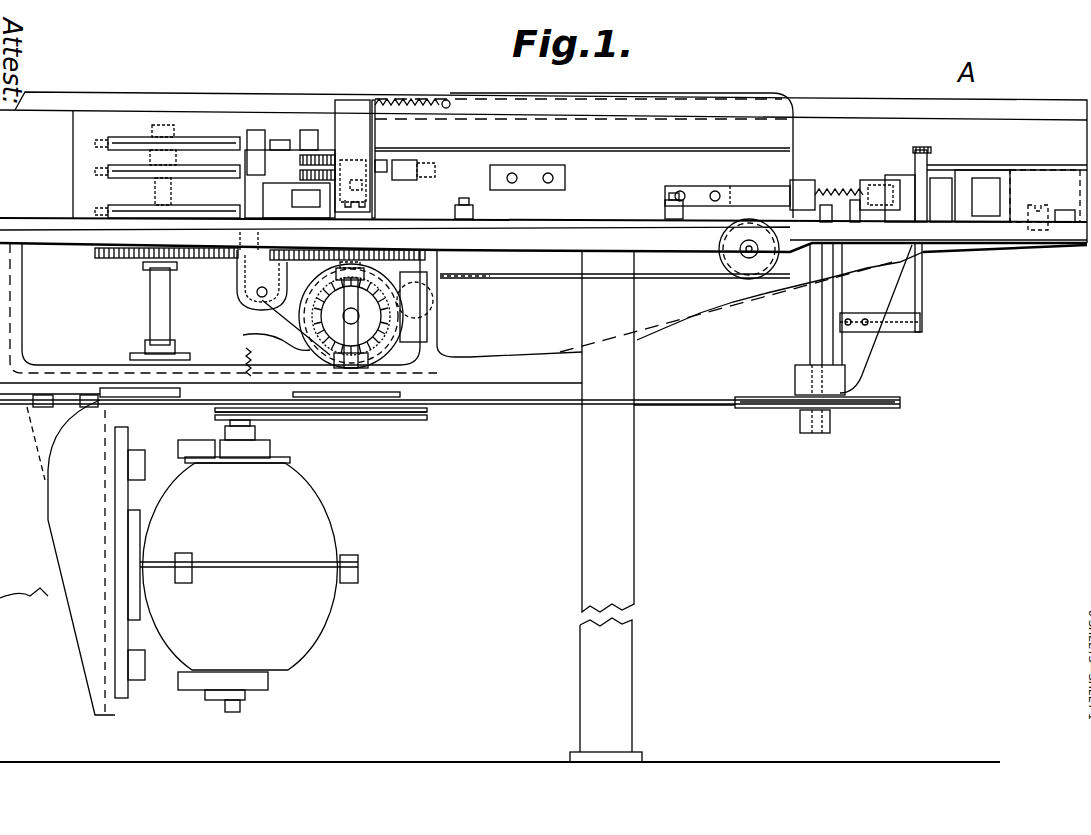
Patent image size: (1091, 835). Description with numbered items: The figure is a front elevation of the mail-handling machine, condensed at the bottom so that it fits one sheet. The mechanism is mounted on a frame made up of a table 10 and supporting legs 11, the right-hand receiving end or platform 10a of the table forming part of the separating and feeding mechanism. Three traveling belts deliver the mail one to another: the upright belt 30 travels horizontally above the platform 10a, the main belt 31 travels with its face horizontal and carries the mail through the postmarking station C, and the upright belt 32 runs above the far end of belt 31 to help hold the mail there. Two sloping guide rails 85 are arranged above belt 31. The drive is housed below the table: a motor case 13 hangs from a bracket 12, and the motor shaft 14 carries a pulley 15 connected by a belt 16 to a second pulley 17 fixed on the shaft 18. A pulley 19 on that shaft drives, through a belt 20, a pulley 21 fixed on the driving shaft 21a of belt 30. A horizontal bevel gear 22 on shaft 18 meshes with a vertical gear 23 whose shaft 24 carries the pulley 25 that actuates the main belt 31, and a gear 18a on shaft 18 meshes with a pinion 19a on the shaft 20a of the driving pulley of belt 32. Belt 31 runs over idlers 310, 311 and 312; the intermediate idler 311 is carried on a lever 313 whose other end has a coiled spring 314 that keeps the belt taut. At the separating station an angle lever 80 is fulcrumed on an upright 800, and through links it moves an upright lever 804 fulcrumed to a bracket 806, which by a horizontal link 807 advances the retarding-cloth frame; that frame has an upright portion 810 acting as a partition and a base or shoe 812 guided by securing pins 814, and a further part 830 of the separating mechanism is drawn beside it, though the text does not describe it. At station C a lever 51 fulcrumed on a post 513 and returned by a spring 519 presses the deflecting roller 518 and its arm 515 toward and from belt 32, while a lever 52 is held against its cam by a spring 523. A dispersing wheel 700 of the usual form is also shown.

The table 10 is at (543, 172).
The receiving end or platform 10a is at (1050, 252).
The supporting legs 11 is at (500, 506).
The bracket 12 is at (127, 562).
The motor case 13 is at (249, 576).
The motor shaft 14 is at (255, 426).
The pulley 15 is at (214, 418).
The belt 16 is at (366, 420).
The second pulley 17 is at (426, 418).
The shaft 18 is at (360, 333).
The gear 18a is at (418, 246).
The pulley 19 is at (395, 396).
The pinion 19a is at (298, 235).
The belt 20 is at (450, 391).
The shaft 20a is at (264, 237).
The pulley 21 is at (740, 410).
The driving shaft 21a is at (810, 312).
The horizontal bevel gear 22 is at (320, 287).
The vertical gear 23 is at (360, 318).
The shaft 24 is at (300, 320).
The pulley 25 is at (356, 305).
The belt 30 is at (958, 272).
The main belt 31 is at (243, 268).
The belt 32 is at (400, 208).
The lever 51 is at (300, 155).
The lever 52 is at (272, 140).
The angle lever 80 is at (990, 168).
The guide rails 85 is at (584, 155).
The idler 310 is at (237, 291).
The idler 311 is at (435, 290).
The idler 312 is at (696, 304).
The lever 313 is at (276, 341).
The coiled spring 314 is at (244, 350).
The post 513 is at (257, 130).
The arm 515 is at (537, 189).
The deflecting or guiding roller 518 is at (500, 165).
The spring 519 is at (305, 130).
The spring 523 is at (340, 112).
The dispersing wheel 700 is at (132, 142).
The upright 800 is at (1078, 172).
The upright lever 804 is at (923, 298).
The bracket 806 is at (903, 333).
The horizontal link 807 is at (880, 317).
The upright portion 810 is at (930, 150).
The base or shoe 812 is at (904, 222).
The securing pins 814 is at (912, 175).
The spring mechanism 830 is at (854, 203).
The station C is at (354, 138).